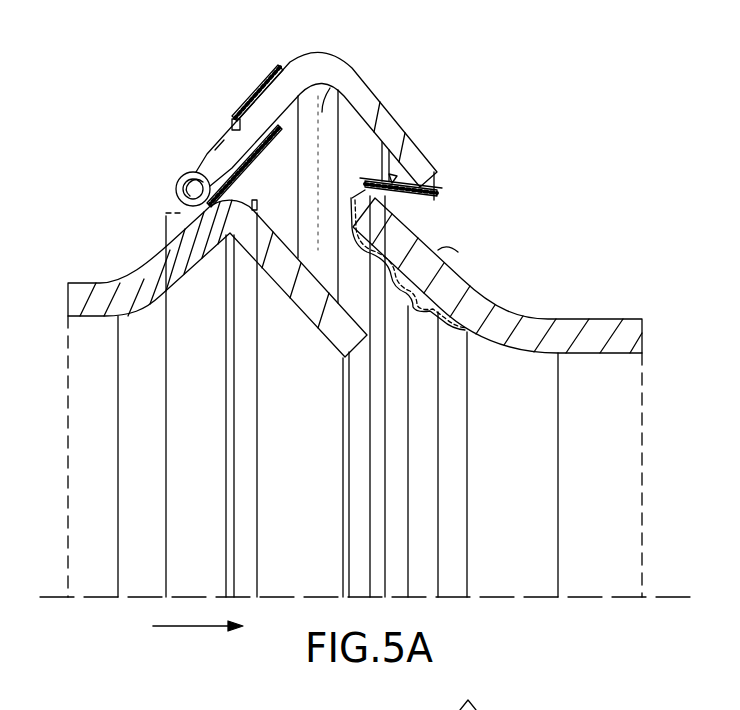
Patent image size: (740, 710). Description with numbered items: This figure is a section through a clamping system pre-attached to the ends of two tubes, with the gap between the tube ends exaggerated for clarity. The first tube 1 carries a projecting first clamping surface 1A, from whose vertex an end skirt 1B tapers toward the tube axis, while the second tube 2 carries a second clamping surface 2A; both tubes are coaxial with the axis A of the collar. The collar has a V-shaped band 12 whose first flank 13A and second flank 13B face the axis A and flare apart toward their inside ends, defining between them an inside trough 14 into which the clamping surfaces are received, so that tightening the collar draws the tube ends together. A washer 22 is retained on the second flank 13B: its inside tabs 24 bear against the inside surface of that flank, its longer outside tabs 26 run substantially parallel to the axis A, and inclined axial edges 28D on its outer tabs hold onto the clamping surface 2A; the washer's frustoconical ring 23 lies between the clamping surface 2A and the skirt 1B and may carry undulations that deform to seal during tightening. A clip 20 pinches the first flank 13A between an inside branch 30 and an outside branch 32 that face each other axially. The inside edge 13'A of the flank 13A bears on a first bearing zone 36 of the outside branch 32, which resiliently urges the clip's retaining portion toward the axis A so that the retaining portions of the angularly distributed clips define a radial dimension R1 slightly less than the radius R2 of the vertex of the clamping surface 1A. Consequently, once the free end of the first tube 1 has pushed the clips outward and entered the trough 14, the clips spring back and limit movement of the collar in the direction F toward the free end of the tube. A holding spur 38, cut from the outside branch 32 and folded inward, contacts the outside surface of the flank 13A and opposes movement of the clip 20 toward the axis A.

The first tube 1 is at (205, 278).
The first clamping surface 1A is at (196, 258).
The end skirt 1B is at (300, 280).
The second tube 2 is at (497, 275).
The second clamping surface 2A is at (455, 268).
The band 12 is at (264, 116).
The first flank 13A is at (242, 112).
The second flank 13B is at (383, 112).
The inside edge of the first flank 13'A is at (141, 211).
The inside trough 14 is at (340, 82).
The clip 20 is at (150, 178).
The washer 22 is at (346, 206).
The frustoconical ring 23 is at (402, 270).
The inside tabs 24 is at (390, 179).
The outside tabs of a first type 26 is at (462, 251).
The inclined axial edges 28D is at (400, 197).
The inside branch 30 is at (236, 190).
The outside branch 32 is at (262, 78).
The first bearing zone 36 is at (200, 168).
The holding spur 38 is at (232, 126).
The radial dimension defined by the retaining portions R1 is at (167, 488).
The radius of the vertex of the clamping surface R2 is at (258, 488).
The axis A is at (670, 597).
The direction towards the free end of the first tube F is at (190, 630).